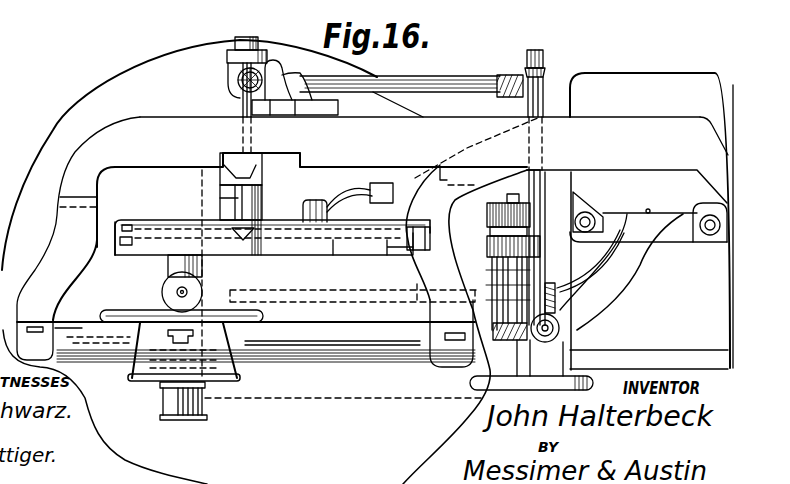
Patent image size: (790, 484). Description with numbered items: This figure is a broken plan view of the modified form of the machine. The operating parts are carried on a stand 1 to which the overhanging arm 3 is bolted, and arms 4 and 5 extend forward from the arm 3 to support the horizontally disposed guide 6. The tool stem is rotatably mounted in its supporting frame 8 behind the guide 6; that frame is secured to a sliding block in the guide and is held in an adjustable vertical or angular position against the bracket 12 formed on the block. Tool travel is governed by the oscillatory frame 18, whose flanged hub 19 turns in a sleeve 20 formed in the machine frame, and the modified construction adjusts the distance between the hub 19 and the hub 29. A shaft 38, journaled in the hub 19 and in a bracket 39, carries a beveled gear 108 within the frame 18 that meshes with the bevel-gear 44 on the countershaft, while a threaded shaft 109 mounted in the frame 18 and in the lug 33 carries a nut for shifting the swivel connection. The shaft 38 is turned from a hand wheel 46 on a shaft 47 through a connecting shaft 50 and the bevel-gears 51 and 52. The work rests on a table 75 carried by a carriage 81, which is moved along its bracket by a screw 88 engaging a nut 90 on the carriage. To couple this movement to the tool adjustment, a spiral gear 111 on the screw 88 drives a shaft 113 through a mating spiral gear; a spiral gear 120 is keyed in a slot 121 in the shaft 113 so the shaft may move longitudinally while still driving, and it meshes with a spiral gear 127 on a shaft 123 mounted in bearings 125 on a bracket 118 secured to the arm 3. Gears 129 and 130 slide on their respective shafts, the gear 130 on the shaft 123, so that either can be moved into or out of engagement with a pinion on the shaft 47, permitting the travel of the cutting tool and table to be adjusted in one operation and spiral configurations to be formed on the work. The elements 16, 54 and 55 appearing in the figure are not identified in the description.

The stand 1 is at (630, 221).
The overhanging arm 3 is at (398, 182).
The arm 4 is at (105, 300).
The arm 5 is at (430, 263).
The guide 6 is at (308, 347).
The supporting frame 8 is at (162, 309).
The bracket 12 is at (145, 361).
The spool 16 is at (165, 399).
The oscillatory frame 18 is at (137, 224).
The flanged hub 19 is at (218, 207).
The sleeve 20 is at (218, 189).
The hub 29 is at (165, 265).
The lug 33 is at (111, 250).
The shaft 38 is at (240, 107).
The bracket 39 is at (228, 52).
The bevel-gear 44 is at (253, 237).
The hand wheel 46 is at (580, 374).
The shaft 47 is at (547, 193).
The shaft 50 is at (436, 84).
The bevel-gears 51 is at (237, 95).
The bevel-gears 52 is at (510, 95).
The casing step 54 is at (333, 177).
The flexible connection 55 is at (362, 207).
The table 75 is at (88, 93).
The carriage 81 is at (362, 403).
The screw 88 is at (377, 297).
The nut 90 is at (417, 304).
The beveled gear 108 is at (242, 226).
The threaded shaft 109 is at (335, 243).
The spiral gear 111 is at (560, 300).
The shaft 113 is at (567, 330).
The bracket 118 is at (635, 263).
The spiral gear 120 is at (533, 342).
The slot 121 is at (567, 333).
The shaft 123 is at (492, 210).
The bearings 125 is at (490, 277).
The spiral gear 127 is at (488, 337).
The gear 129 is at (492, 232).
The gear 130 is at (495, 253).